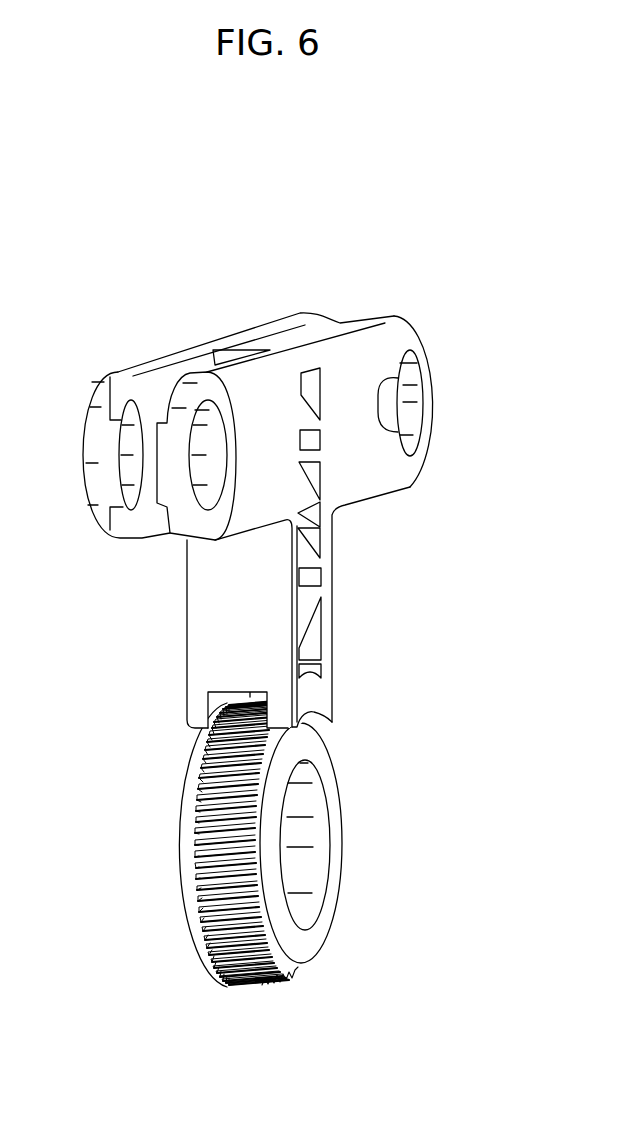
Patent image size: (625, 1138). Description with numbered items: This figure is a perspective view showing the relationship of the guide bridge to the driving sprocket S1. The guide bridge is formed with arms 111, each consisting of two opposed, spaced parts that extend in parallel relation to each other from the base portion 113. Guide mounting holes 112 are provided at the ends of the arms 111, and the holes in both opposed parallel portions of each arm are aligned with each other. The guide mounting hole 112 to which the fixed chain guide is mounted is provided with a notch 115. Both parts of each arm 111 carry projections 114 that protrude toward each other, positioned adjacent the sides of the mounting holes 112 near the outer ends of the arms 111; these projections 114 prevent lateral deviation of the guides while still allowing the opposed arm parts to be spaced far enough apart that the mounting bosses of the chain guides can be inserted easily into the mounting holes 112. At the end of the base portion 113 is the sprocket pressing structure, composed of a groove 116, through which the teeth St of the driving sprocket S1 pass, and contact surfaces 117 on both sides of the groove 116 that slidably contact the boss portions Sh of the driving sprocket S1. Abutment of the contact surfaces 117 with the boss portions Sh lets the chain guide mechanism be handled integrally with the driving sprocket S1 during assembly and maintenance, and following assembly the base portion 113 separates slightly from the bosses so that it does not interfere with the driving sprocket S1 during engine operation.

The arms 111 is at (212, 372).
The guide mounting holes 112 is at (133, 423).
The base portion 113 is at (212, 630).
The projections 114 is at (160, 473).
The notch 115 is at (385, 422).
The groove 116 is at (238, 697).
The contact surfaces 117 is at (307, 727).
The driving sprocket S1 is at (328, 798).
The boss portions Sh is at (258, 869).
The teeth St is at (232, 957).